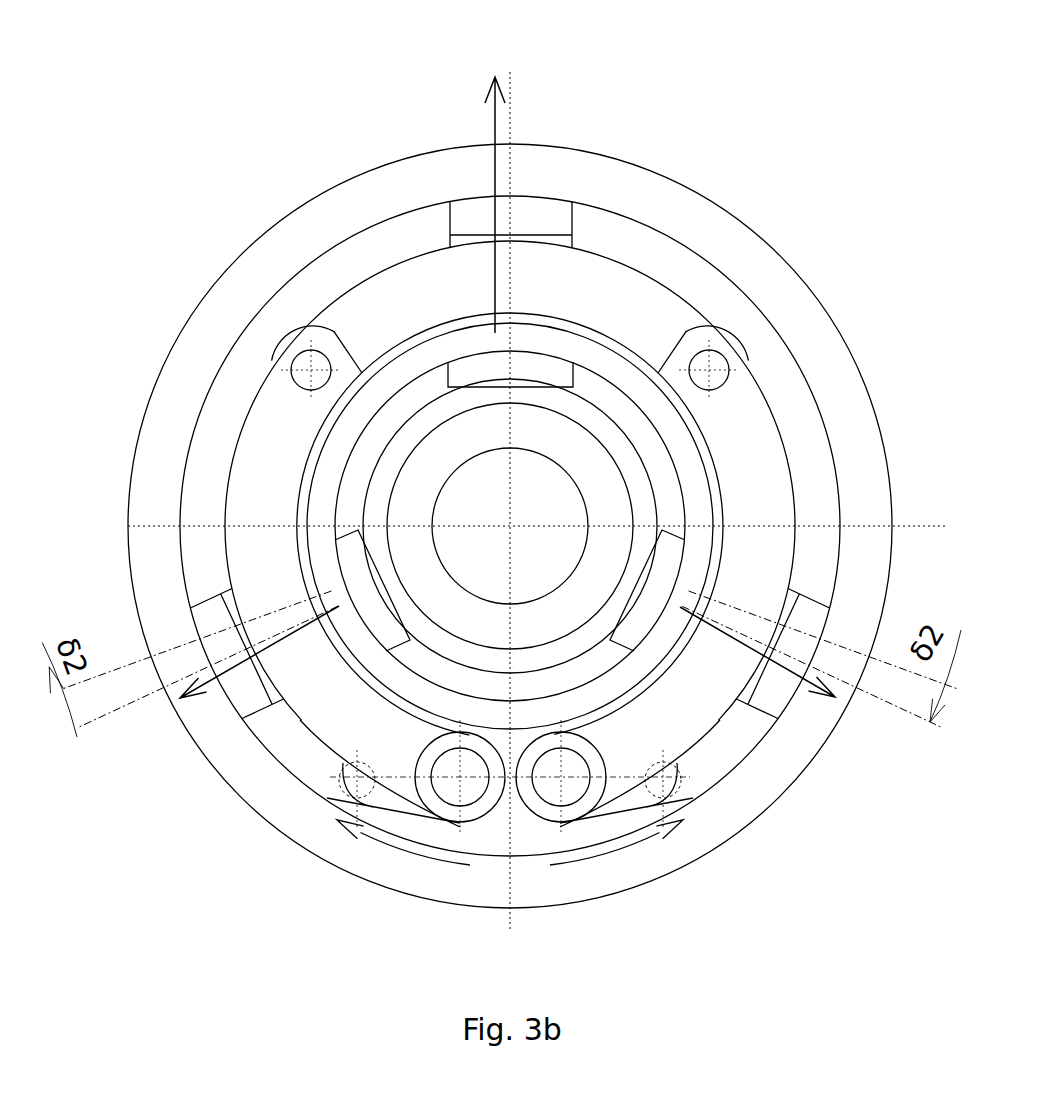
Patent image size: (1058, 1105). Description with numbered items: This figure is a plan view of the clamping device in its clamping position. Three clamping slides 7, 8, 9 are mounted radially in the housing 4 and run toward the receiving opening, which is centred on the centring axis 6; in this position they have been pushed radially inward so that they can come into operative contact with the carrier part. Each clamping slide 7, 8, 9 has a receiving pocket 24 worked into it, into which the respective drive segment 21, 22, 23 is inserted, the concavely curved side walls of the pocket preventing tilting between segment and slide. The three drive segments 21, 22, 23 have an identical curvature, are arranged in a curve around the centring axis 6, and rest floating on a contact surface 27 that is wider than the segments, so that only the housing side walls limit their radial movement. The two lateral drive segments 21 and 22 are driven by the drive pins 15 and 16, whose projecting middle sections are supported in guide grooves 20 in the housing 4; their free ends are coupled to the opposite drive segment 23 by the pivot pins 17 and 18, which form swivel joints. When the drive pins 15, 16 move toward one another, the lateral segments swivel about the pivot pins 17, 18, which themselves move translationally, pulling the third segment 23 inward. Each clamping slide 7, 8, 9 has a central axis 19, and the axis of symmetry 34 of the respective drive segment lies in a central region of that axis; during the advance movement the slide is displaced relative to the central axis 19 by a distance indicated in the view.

The housing 4 is at (800, 322).
The centring axis 6 is at (510, 527).
The clamping slide 7 is at (213, 617).
The clamping slide 8 is at (772, 705).
The clamping slide 9 is at (540, 220).
The drive pin 15 is at (452, 787).
The drive pin 16 is at (572, 790).
The pivot pin 17 is at (296, 372).
The pivot pin 18 is at (728, 346).
The central axis 19 is at (514, 126).
The guide groove 20 is at (350, 778).
The drive segment 21 is at (265, 465).
The drive segment 22 is at (752, 480).
The drive segment 23 is at (382, 318).
The receiving pocket 24 is at (570, 240).
The contact surface 27 is at (642, 245).
The axis of symmetry 34 is at (473, 243).